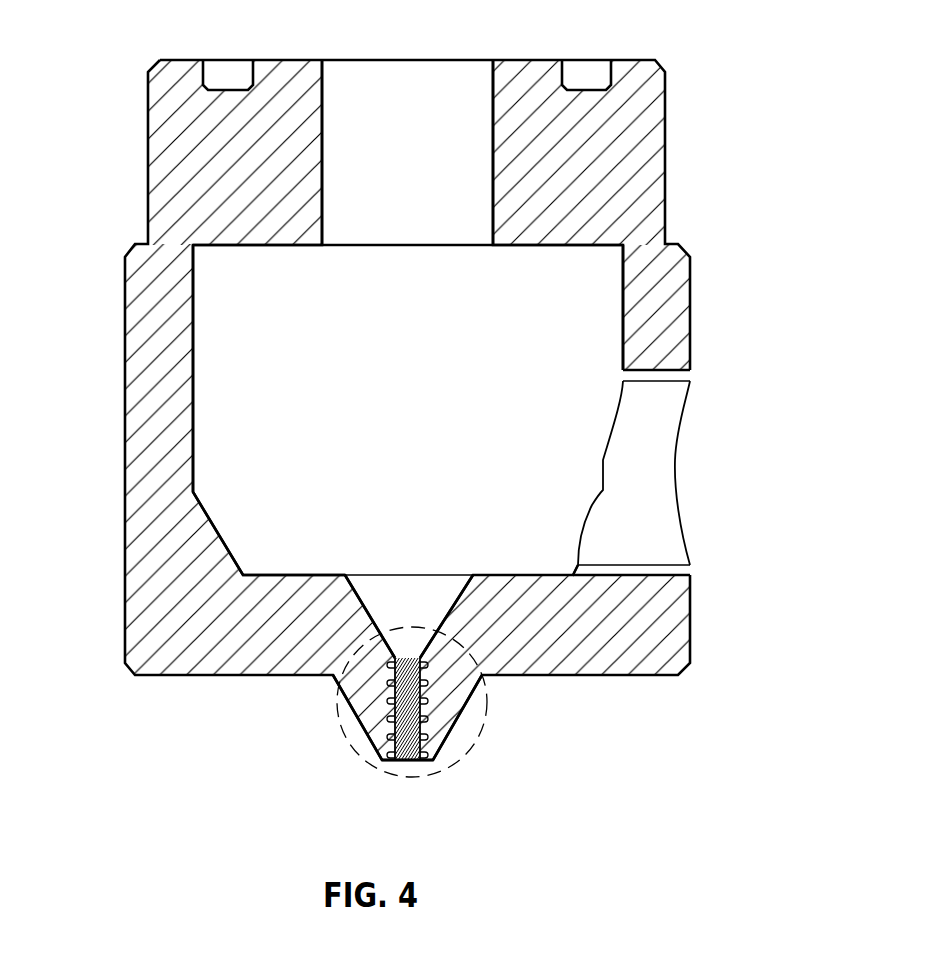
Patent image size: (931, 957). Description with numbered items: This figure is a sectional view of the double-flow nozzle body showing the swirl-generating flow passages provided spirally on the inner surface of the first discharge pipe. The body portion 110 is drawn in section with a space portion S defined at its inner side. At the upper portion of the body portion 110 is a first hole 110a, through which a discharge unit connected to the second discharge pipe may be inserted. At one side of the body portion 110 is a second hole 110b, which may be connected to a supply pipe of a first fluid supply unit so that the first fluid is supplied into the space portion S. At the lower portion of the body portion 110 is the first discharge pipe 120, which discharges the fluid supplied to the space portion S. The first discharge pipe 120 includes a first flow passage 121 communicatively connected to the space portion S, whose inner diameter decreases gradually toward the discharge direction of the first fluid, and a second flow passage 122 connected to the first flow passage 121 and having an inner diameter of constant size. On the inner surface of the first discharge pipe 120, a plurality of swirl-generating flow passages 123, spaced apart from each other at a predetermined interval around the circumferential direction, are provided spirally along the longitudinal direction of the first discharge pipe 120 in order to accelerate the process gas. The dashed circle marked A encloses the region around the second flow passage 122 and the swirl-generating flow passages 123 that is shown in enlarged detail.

The body portion 110 is at (657, 170).
The first hole 110a is at (414, 140).
The second hole 110b is at (648, 509).
The space portion S is at (262, 335).
The first discharge pipe 120 is at (336, 683).
The first flow passage 121 is at (410, 603).
The second flow passage 122 is at (400, 760).
The swirl-generating flow passages 123 is at (422, 733).
The enlarged region A is at (462, 760).